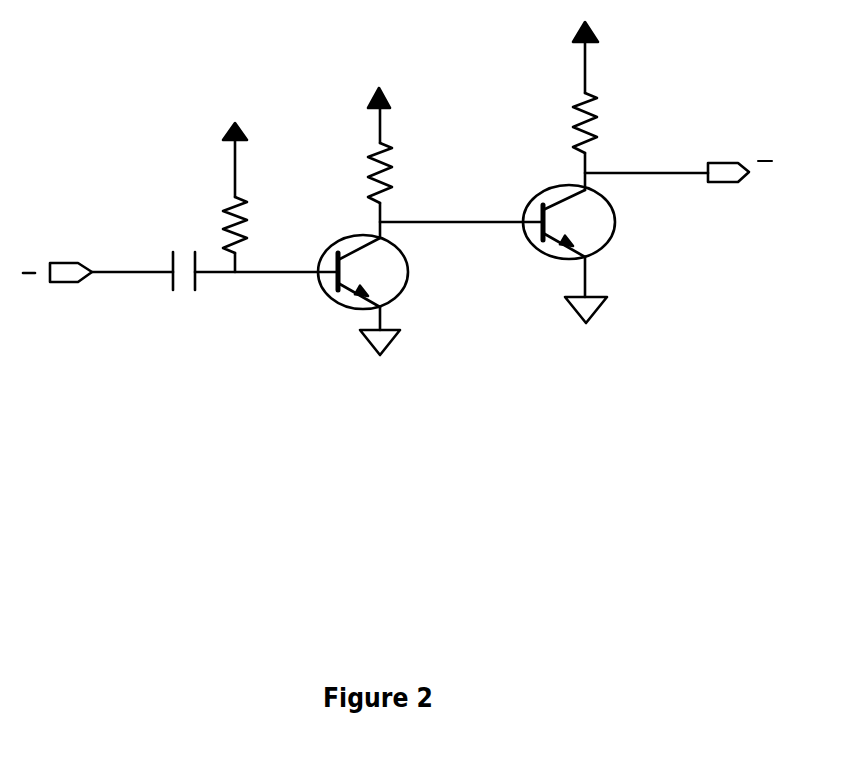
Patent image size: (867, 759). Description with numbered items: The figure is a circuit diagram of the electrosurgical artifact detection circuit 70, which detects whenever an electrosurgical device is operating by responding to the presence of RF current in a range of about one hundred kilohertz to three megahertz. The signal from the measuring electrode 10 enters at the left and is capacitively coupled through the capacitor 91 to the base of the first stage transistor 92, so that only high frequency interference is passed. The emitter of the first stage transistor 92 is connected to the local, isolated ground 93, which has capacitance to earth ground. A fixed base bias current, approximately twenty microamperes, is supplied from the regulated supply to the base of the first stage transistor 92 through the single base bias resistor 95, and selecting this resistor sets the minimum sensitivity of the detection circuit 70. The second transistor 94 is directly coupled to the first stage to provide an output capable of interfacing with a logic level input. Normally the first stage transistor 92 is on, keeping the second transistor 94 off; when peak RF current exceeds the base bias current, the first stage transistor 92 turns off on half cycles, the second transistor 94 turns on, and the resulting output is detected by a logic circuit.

The electrosurgical artifact detection circuit 70 is at (133, 158).
The measuring electrode 10 is at (72, 255).
The capacitor 91 is at (173, 253).
The base bias resistor 95 is at (258, 206).
The first stage transistor 92 is at (320, 288).
The local isolated ground 93 is at (400, 338).
The second transistor 94 is at (525, 255).